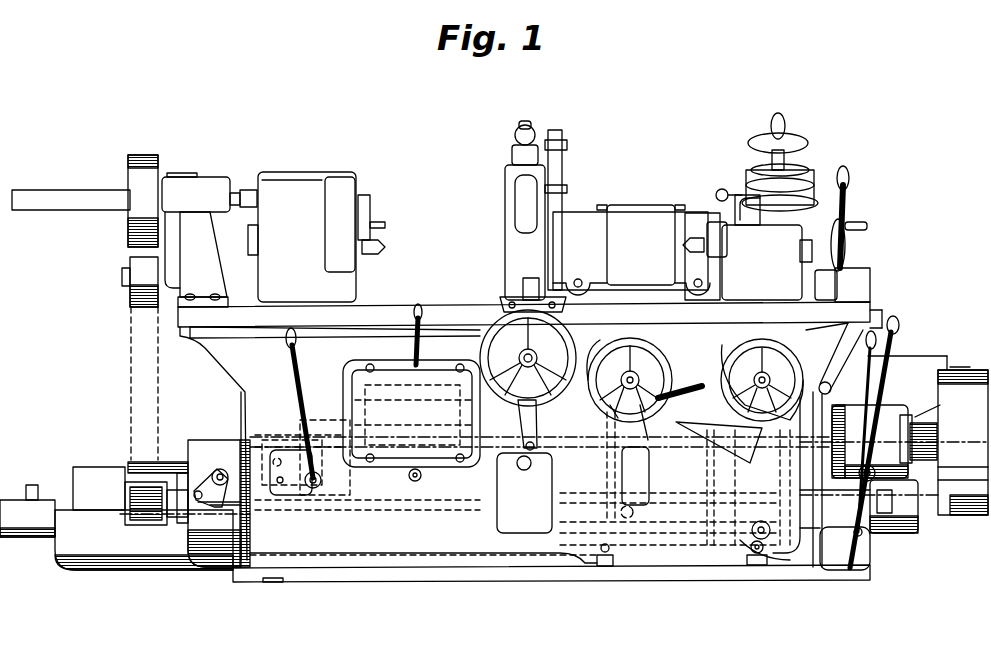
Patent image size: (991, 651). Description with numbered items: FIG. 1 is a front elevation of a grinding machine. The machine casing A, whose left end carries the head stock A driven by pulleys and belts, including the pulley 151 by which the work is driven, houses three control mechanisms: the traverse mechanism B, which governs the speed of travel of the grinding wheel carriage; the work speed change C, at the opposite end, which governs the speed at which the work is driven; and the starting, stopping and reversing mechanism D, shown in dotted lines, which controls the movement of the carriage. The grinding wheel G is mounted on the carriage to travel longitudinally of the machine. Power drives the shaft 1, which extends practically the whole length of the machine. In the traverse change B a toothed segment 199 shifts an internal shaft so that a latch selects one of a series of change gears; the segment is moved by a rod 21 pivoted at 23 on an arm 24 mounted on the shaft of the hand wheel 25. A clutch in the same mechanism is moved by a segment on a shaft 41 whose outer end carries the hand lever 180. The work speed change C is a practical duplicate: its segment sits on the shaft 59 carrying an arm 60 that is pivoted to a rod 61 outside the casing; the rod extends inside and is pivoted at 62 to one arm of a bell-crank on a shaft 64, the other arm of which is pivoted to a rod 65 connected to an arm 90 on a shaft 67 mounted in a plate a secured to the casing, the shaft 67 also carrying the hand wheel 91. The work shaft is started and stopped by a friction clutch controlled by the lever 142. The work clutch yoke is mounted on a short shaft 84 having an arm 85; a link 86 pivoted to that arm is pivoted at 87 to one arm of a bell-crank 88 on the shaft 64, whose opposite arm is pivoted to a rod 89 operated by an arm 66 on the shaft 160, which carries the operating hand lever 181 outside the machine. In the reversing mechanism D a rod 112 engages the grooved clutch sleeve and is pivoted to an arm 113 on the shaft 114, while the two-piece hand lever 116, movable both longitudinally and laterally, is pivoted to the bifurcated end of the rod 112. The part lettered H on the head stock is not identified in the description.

The machine casing A is at (215, 358).
The traverse mechanism B is at (721, 492).
The work speed change mechanism C is at (317, 553).
The starting, stopping and reversing mechanism D is at (411, 403).
The grinding wheel G is at (512, 255).
The headstock housing H is at (316, 237).
The plate of the machine casing a is at (575, 557).
The shaft 1 is at (643, 476).
The rod 21 is at (612, 452).
The pivot 23 is at (606, 404).
The arm 24 is at (649, 424).
The hand wheel 25 is at (636, 346).
The shaft 41 is at (540, 425).
The shaft 59 is at (219, 496).
The arm 60 is at (178, 470).
The rod 61 is at (217, 507).
The pivot 62 is at (756, 540).
The shaft 64 is at (785, 462).
The rod 65 is at (880, 440).
The arm 66 is at (834, 357).
The shaft 67 is at (698, 384).
The short shaft 84 is at (367, 465).
The arm 85 is at (230, 562).
The link 86 is at (415, 533).
The pivot 87 is at (758, 556).
The bell-crank 88 is at (778, 556).
The rod 89 is at (760, 444).
The arm 90 is at (795, 345).
The hand wheel 91 is at (742, 345).
The rod 112 is at (444, 475).
The arm 113 is at (524, 493).
The shaft 114 is at (497, 330).
The hand lever 116 is at (422, 345).
The lever 142 is at (310, 390).
The pulley 151 is at (150, 530).
The shaft 160 is at (726, 426).
The hand lever 180 is at (716, 431).
The operating hand lever 181 is at (830, 386).
The toothed segment 199 is at (638, 516).